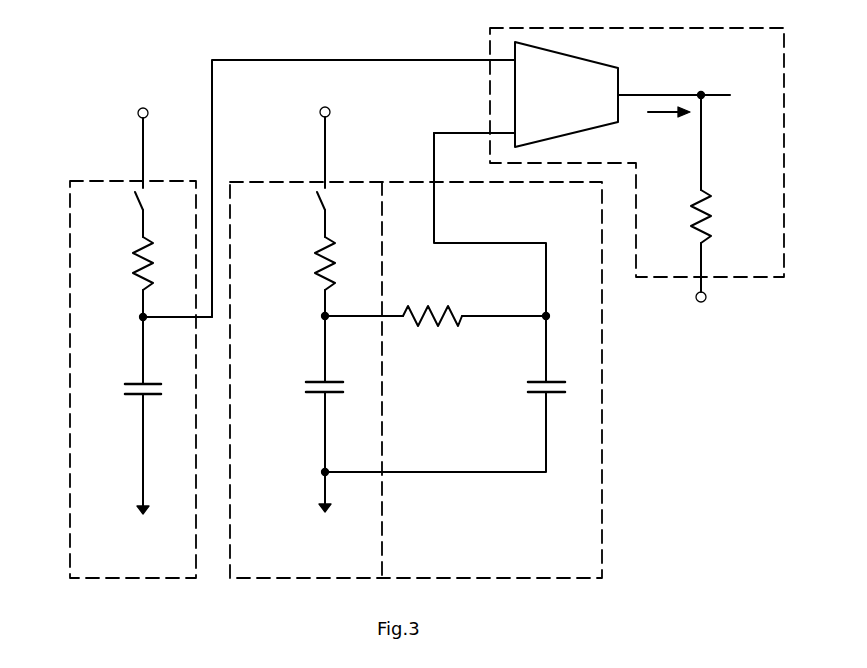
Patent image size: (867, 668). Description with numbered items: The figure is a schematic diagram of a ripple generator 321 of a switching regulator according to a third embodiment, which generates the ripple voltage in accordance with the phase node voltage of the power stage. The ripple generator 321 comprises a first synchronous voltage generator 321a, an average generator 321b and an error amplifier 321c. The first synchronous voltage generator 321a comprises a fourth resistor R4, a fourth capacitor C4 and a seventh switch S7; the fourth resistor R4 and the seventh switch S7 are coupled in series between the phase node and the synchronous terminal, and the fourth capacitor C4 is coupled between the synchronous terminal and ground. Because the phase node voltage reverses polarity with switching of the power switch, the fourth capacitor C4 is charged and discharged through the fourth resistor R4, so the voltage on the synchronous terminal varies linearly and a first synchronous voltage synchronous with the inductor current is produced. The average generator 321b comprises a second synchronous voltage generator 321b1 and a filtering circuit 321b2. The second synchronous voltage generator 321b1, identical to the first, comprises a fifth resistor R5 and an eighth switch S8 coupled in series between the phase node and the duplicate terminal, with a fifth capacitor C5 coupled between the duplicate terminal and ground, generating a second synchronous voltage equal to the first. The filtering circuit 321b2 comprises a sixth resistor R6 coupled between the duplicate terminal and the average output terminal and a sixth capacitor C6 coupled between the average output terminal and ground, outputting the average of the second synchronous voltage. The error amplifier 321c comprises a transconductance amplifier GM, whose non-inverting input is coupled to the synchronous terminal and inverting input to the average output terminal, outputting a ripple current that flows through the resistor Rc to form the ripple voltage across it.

The ripple generator 321 is at (701, 561).
The first synchronous voltage generator 321a is at (106, 182).
The average generator 321b is at (637, 439).
The second synchronous voltage generator 321b1 is at (373, 560).
The filtering circuit 321b2 is at (594, 561).
The error amplifier 321c is at (738, 277).
The seventh switch S7 is at (115, 201).
The eighth switch S8 is at (295, 201).
The fourth resistor R4 is at (120, 263).
The fifth resistor R5 is at (300, 263).
The sixth resistor R6 is at (432, 331).
The fourth capacitor C4 is at (124, 390).
The fifth capacitor C5 is at (304, 390).
The sixth capacitor C6 is at (531, 390).
The resistor Rc is at (681, 216).
The transconductance amplifier GM is at (566, 94).